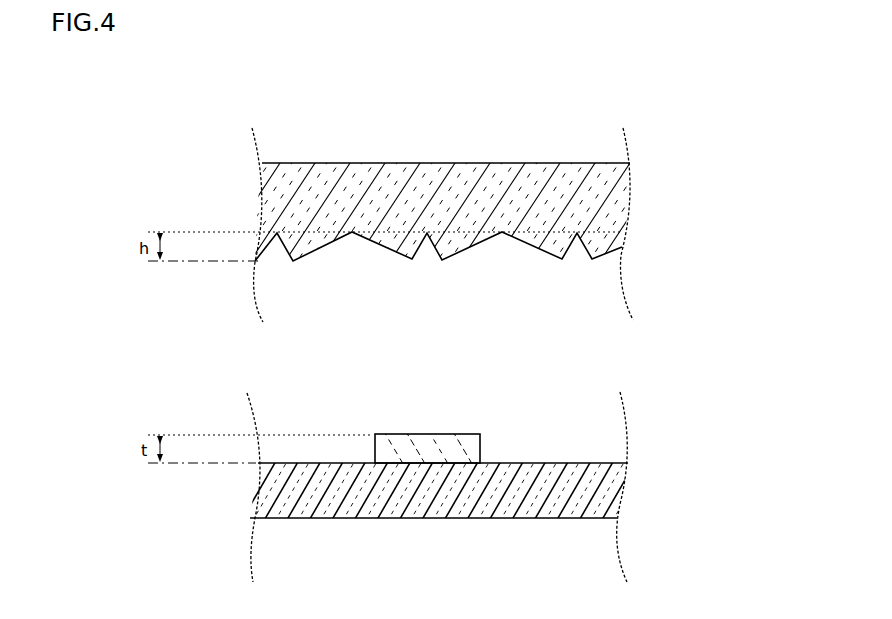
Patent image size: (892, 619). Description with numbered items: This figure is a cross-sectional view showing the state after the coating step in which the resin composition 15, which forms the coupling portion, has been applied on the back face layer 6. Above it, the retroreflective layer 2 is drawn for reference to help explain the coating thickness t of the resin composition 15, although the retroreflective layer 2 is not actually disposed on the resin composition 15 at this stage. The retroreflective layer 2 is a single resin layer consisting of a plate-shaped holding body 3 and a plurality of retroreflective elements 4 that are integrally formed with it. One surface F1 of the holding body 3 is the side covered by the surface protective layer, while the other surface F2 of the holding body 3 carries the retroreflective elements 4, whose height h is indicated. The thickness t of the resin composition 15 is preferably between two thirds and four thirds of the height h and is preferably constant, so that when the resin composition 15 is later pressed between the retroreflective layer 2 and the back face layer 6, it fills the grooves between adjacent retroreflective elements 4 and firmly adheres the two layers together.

The retroreflective layer 2 is at (444, 225).
The holding body 3 is at (620, 202).
The retroreflective elements 4 is at (465, 231).
The back face layer 6 is at (600, 507).
The resin composition 15 is at (483, 456).
The one surface F1 is at (342, 165).
The other surface F2 is at (462, 200).